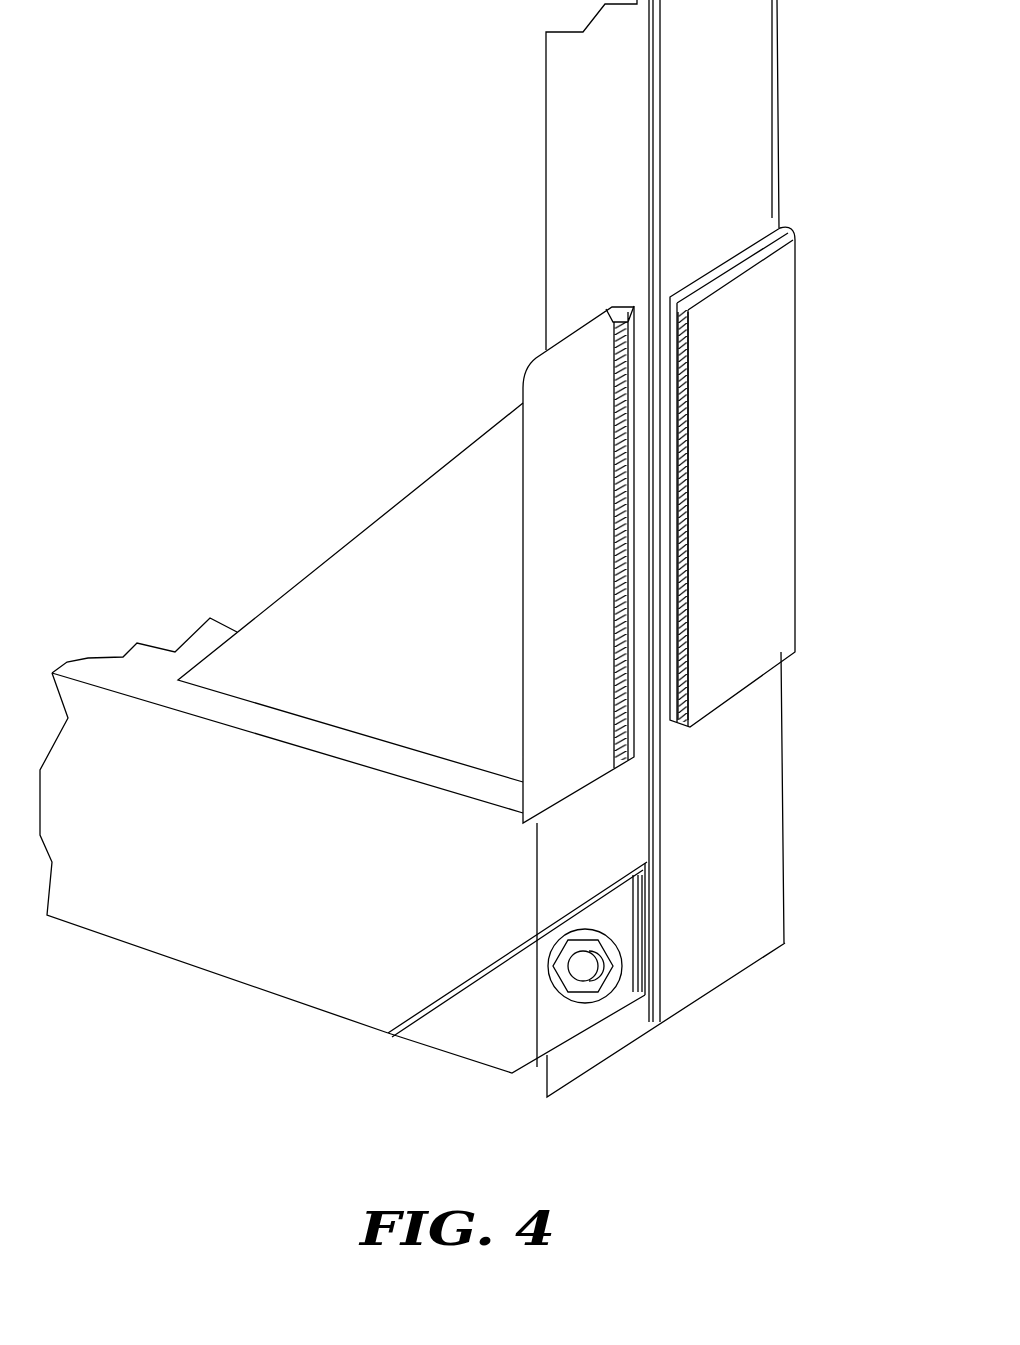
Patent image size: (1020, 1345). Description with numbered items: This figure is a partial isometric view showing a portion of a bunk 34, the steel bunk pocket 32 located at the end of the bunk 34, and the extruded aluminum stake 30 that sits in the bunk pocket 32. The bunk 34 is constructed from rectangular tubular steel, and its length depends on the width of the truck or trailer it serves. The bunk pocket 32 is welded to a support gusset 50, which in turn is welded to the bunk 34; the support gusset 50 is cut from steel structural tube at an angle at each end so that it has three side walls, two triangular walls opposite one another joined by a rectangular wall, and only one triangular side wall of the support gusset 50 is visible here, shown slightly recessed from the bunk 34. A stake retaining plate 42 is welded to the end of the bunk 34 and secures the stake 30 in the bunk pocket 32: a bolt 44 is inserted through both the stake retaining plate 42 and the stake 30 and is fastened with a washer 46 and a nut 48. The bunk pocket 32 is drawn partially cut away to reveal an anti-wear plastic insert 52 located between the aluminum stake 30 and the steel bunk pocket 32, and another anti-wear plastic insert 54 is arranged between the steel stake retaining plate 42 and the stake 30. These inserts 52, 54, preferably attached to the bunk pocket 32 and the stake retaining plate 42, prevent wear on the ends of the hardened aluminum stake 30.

The extruded aluminum stake 30 is at (544, 188).
The steel bunk pocket 32 is at (802, 427).
The bunk 34 is at (231, 977).
The stake retaining plate 42 is at (418, 1039).
The bolt 44 is at (576, 962).
The washer 46 is at (612, 1005).
The nut 48 is at (590, 1005).
The support gusset 50 is at (418, 466).
The anti-wear plastic insert 52 is at (610, 300).
The anti-wear plastic insert 54 is at (657, 941).